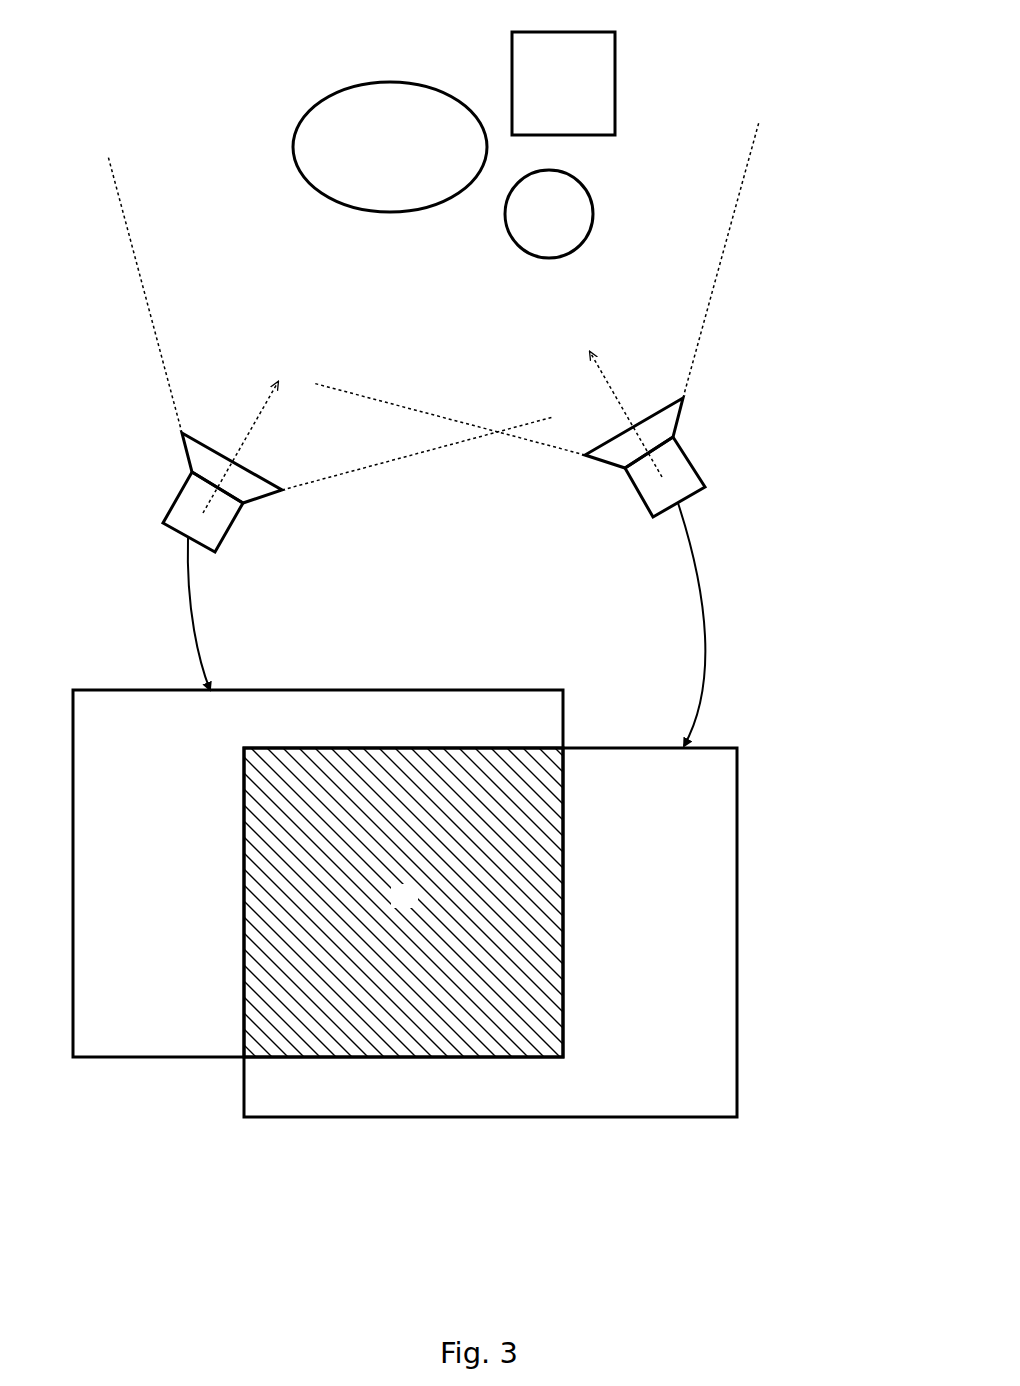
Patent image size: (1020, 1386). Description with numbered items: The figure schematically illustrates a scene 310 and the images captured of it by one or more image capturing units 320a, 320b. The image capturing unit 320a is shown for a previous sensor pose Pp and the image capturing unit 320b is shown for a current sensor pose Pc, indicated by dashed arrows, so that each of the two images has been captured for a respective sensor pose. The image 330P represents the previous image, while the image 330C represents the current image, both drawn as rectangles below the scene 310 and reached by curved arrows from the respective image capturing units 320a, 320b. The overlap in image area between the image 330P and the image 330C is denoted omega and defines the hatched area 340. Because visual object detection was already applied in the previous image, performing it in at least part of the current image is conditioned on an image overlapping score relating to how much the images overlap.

The scene 310 is at (333, 52).
The image capturing unit 320a is at (184, 493).
The image capturing unit 320b is at (697, 472).
The previous sensor pose Pp is at (249, 447).
The current sensor pose Pc is at (626, 414).
The previous image 330P is at (177, 1035).
The current image 330C is at (680, 1102).
The dashed area 340 is at (377, 1035).